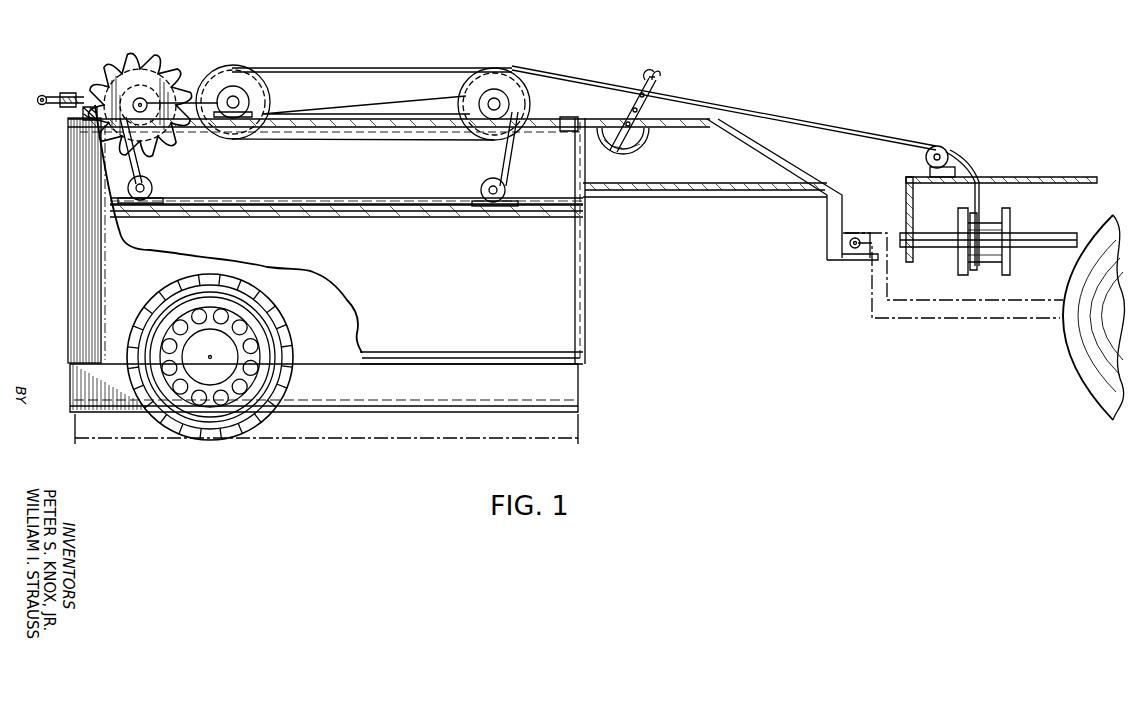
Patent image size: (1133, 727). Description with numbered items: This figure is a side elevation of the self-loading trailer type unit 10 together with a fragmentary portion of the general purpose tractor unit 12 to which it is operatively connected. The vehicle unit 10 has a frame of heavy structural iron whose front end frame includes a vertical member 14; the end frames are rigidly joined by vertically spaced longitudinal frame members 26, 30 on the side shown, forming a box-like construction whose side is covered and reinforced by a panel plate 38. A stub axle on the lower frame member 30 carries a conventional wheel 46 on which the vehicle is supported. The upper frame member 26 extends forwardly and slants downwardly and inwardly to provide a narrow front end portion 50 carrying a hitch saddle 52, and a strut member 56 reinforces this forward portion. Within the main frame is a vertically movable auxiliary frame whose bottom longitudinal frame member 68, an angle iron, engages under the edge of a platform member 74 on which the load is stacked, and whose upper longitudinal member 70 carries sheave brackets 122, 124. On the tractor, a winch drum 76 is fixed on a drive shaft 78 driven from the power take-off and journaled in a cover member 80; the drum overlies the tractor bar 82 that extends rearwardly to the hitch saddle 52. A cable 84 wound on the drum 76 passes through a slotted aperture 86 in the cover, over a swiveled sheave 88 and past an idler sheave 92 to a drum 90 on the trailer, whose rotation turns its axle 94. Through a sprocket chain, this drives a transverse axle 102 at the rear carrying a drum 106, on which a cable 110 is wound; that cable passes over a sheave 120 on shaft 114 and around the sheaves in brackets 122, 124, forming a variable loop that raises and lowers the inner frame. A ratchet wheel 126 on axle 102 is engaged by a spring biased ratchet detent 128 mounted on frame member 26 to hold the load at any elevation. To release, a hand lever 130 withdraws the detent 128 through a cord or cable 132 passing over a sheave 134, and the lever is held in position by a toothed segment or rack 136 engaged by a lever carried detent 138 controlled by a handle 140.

The self-loading trailer type unit 10 is at (66, 214).
The general purpose tractor unit 12 is at (1064, 342).
The vertical member 14 is at (573, 280).
The longitudinal frame member 26 is at (348, 126).
The longitudinal frame member 30 is at (446, 352).
The panel plate 38 is at (336, 262).
The wheel 46 is at (193, 418).
The narrow front end portion 50 is at (826, 240).
The hitch saddle 52 is at (878, 212).
The strut member 56 is at (720, 196).
The bottom longitudinal frame member 68 is at (584, 388).
The upper longitudinal member 70 is at (412, 218).
The platform member 74 is at (508, 440).
The winch drum 76 is at (1010, 220).
The drive shaft 78 is at (1052, 247).
The cover member 80 is at (1066, 178).
The tractor bar 82 is at (948, 310).
The cable 84 is at (890, 134).
The slotted aperture 86 is at (986, 182).
The swiveled sheave 88 is at (926, 158).
The drum 90 is at (232, 70).
The idler sheave 92 is at (506, 74).
The axle 94 is at (246, 102).
The axle 102 is at (144, 98).
The drum 106 is at (166, 138).
The cable 110 is at (324, 196).
The shaft 114 is at (510, 104).
The sheave 120 is at (480, 92).
The bracket 122 is at (483, 190).
The bracket 124 is at (152, 186).
The ratchet wheel 126 is at (168, 42).
The spring biased ratchet detent 128 is at (90, 104).
The hand lever 130 is at (641, 88).
The cord or cable 132 is at (558, 126).
The sheave 134 is at (42, 95).
The toothed segment or rack 136 is at (646, 140).
The lever carried detent 138 is at (638, 110).
The handle 140 is at (662, 80).